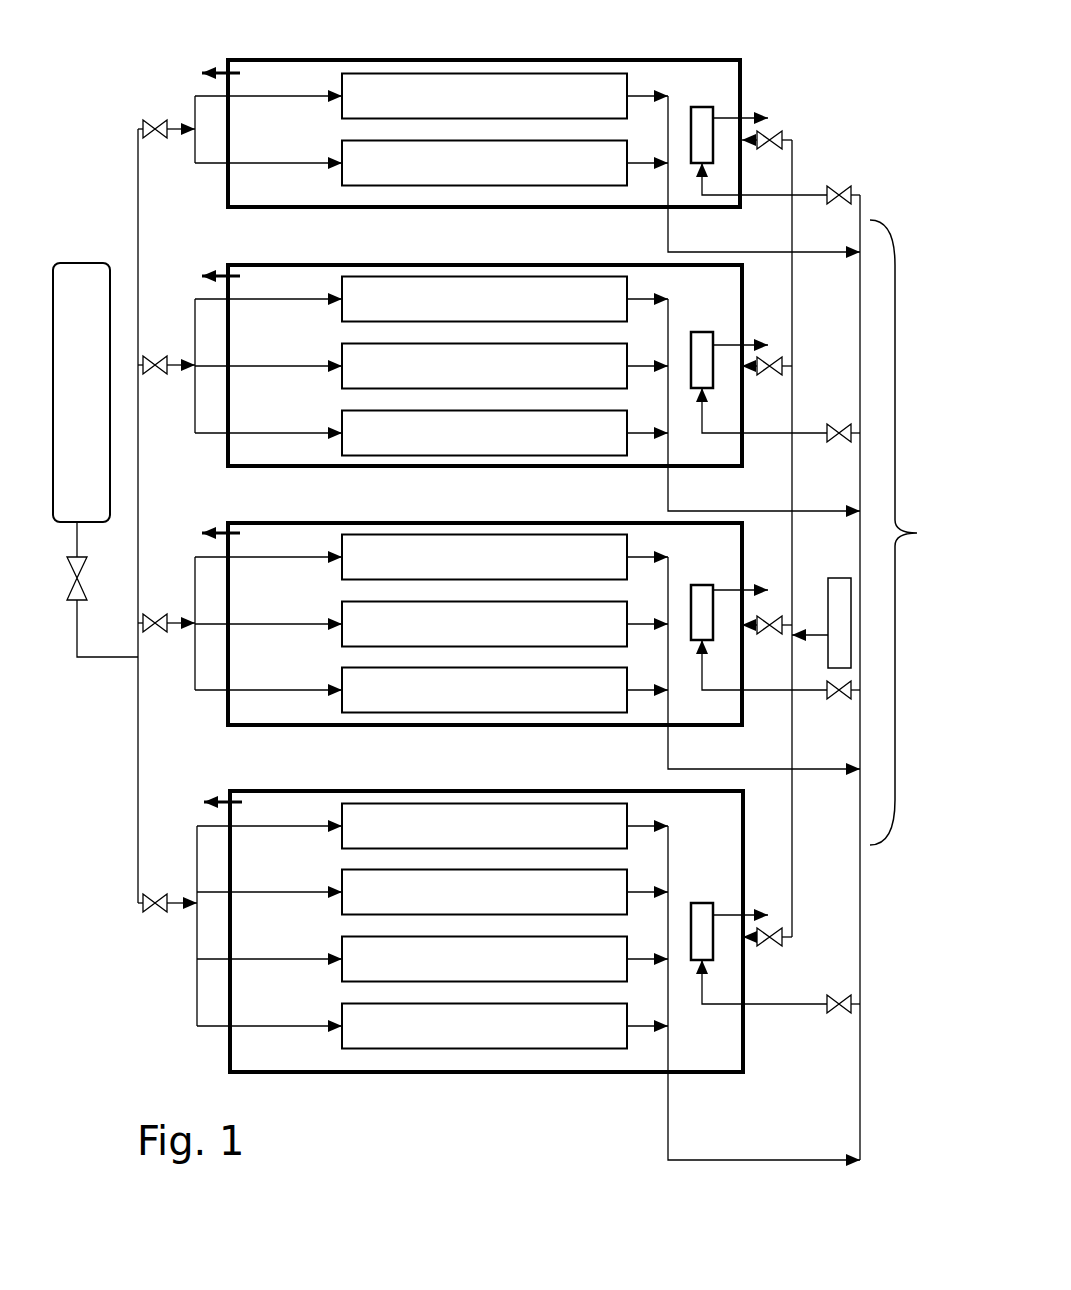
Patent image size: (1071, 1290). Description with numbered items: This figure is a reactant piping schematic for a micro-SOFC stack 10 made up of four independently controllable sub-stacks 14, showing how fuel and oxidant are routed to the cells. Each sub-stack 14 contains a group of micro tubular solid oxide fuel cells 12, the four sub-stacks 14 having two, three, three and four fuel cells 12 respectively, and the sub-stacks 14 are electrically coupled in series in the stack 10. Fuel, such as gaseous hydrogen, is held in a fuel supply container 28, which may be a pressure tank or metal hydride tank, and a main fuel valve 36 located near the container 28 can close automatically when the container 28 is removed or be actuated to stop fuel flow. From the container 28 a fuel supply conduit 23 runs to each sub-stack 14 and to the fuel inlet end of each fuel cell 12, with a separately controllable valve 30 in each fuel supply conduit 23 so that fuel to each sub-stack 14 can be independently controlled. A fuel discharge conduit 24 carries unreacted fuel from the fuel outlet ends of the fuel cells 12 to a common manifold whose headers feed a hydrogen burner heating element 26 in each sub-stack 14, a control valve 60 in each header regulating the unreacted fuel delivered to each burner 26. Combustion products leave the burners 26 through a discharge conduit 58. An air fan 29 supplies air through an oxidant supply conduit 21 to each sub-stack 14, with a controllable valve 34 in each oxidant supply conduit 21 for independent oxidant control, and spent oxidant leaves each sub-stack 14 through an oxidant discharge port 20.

The micro-SOFC stack 10 is at (908, 532).
The micro tubular solid oxide fuel cell 12 is at (472, 140).
The sub-stack 14 is at (578, 62).
The oxidant discharge port 20 is at (215, 66).
The oxidant supply conduit 21 is at (793, 746).
The fuel supply conduit 23 is at (133, 802).
The fuel discharge conduit 24 is at (668, 218).
The heating element (hydrogen burner) 26 is at (702, 118).
The fuel supply container 28 is at (93, 262).
The air fan 29 is at (840, 590).
The valve 30 is at (160, 633).
The controllable valve 34 is at (770, 152).
The main fuel valve 36 is at (66, 567).
The discharge conduit 58 is at (747, 117).
The control valve 60 is at (856, 189).